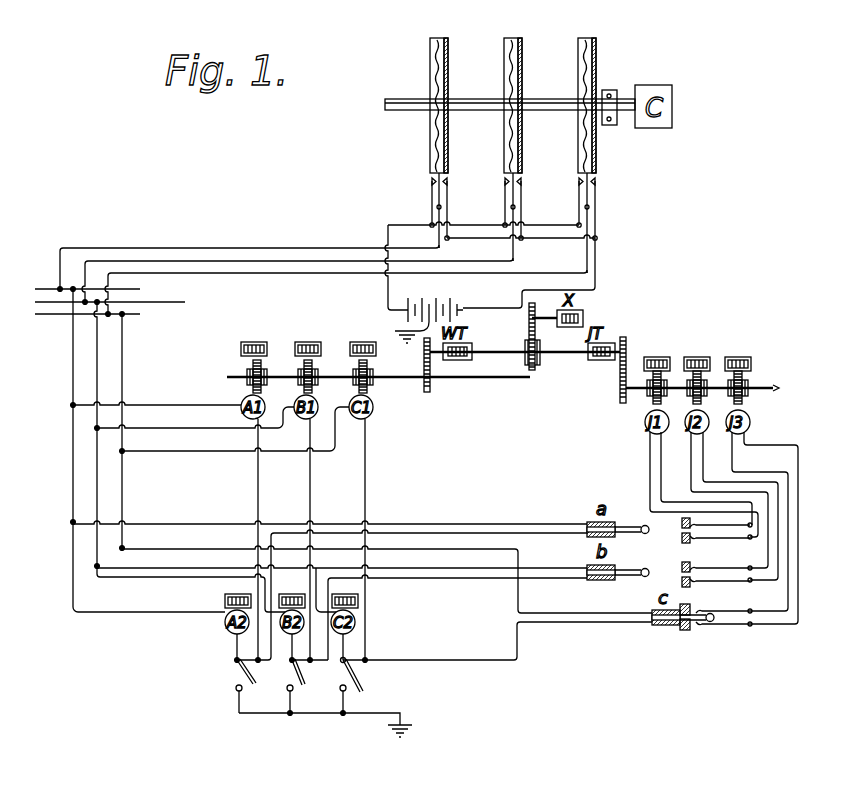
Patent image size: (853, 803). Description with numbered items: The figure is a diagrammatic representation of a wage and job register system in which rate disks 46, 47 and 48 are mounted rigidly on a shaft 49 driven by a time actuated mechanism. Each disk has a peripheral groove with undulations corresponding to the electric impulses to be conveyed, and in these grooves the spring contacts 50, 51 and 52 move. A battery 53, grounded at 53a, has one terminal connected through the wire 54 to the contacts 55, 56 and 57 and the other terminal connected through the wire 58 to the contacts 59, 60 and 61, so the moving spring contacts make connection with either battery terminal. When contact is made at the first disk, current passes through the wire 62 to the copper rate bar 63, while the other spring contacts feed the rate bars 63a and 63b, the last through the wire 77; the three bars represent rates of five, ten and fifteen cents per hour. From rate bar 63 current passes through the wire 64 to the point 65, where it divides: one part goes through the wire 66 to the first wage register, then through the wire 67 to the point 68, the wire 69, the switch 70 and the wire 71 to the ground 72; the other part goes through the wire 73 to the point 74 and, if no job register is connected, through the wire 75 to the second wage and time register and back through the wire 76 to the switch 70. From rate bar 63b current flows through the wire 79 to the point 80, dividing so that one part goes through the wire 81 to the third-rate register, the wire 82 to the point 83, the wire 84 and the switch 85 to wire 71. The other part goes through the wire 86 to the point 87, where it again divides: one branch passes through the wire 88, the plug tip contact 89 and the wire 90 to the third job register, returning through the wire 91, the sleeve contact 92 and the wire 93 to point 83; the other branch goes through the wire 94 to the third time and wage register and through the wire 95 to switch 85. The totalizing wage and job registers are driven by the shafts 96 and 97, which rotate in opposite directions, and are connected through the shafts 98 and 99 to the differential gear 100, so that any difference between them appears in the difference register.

The rate disk 46 is at (446, 45).
The rate disk 47 is at (520, 43).
The rate disk 48 is at (605, 90).
The shaft 49 is at (396, 111).
The spring contact 50 is at (442, 178).
The spring contact 51 is at (516, 178).
The spring contact 52 is at (590, 178).
The battery 53 is at (437, 312).
The ground 53a is at (401, 331).
The wire 54 is at (600, 272).
The contact 55 is at (450, 183).
The contact 56 is at (524, 183).
The contact 57 is at (598, 183).
The wire 58 is at (385, 238).
The contact 59 is at (431, 184).
The contact 60 is at (504, 186).
The contact 61 is at (578, 188).
The wire 62 is at (226, 247).
The rate bar 63 is at (140, 289).
The rate bar 63a is at (126, 300).
The rate bar 63b is at (140, 314).
The wire 64 is at (73, 345).
The point 65 is at (73, 405).
The wire 66 is at (183, 401).
The wire 67 is at (259, 488).
The point 68 is at (259, 662).
The wire 69 is at (250, 688).
The switch 70 is at (244, 676).
The wire 71 is at (366, 714).
The ground 72 is at (408, 735).
The wire 73 is at (73, 466).
The point 74 is at (73, 523).
The wire 75 is at (152, 613).
The wire 76 is at (236, 648).
The wire 77 is at (296, 275).
The wire 79 is at (123, 372).
The point 80 is at (124, 452).
The wire 81 is at (216, 452).
The wire 82 is at (367, 485).
The point 83 is at (368, 659).
The wire 84 is at (357, 668).
The switch 85 is at (350, 682).
The wire 86 is at (123, 500).
The point 87 is at (123, 548).
The wire 88 is at (204, 560).
The tip contact 89 is at (714, 614).
The wire 90 is at (786, 482).
The wire 91 is at (800, 481).
The sleeve contact 92 is at (742, 630).
The wire 93 is at (583, 623).
The wire 94 is at (187, 578).
The wire 95 is at (344, 664).
The shaft 96 is at (432, 360).
The shaft 97 is at (621, 372).
The shaft 98 is at (500, 365).
The shaft 99 is at (568, 362).
The differential gear 100 is at (536, 370).